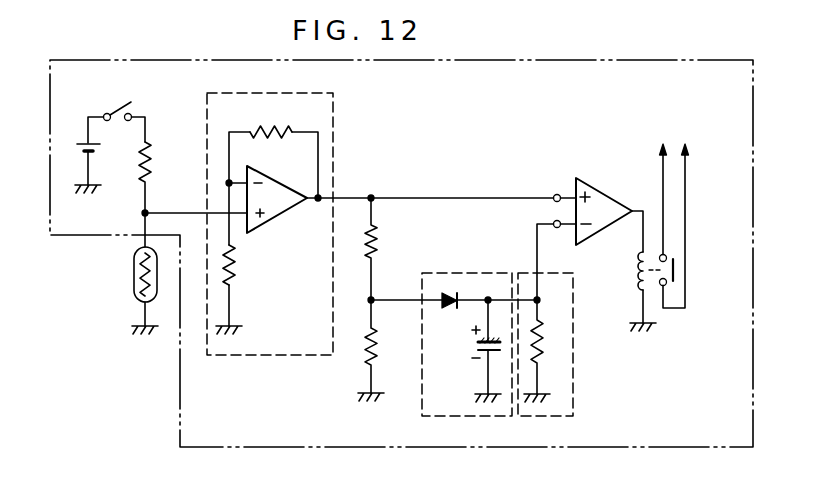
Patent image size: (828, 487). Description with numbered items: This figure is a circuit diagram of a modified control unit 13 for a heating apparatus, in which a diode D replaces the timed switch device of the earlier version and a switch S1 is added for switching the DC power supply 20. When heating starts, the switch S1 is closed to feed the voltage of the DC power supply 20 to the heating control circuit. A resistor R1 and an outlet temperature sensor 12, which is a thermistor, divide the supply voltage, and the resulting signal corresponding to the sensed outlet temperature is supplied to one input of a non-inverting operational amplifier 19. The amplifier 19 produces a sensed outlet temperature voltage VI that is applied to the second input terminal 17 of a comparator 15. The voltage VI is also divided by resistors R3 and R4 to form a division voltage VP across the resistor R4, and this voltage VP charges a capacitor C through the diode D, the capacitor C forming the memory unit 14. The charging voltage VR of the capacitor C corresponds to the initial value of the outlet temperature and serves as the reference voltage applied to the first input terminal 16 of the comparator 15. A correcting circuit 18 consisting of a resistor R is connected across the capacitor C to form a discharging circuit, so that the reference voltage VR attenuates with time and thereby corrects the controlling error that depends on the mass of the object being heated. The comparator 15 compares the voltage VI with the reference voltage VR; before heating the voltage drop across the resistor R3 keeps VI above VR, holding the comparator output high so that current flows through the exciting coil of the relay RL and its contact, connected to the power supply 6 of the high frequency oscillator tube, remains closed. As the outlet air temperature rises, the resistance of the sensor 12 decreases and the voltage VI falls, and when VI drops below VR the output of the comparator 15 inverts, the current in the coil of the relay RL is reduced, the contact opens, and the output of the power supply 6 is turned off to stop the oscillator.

The non-inverting operational amplifier 19 is at (241, 90).
The switch S1 is at (128, 104).
The DC power supply 20 is at (80, 144).
The resistor R1 is at (152, 150).
The outlet temperature sensor 12 is at (134, 275).
The control unit 13 is at (180, 364).
The sensed outlet temperature voltage VI is at (461, 186).
The resistor R3 is at (378, 243).
The division voltage VP is at (452, 289).
The resistor R4 is at (379, 350).
The memory unit 14 is at (424, 383).
The diode D is at (447, 320).
The capacitor C is at (473, 346).
The correcting circuit 18 is at (572, 384).
The correcting resistor R is at (542, 342).
The reference voltage VR is at (549, 263).
The second input terminal 17 is at (557, 194).
The first input terminal 16 is at (553, 222).
The comparator 15 is at (603, 186).
The relay RL is at (631, 271).
The power supply 6 is at (659, 204).